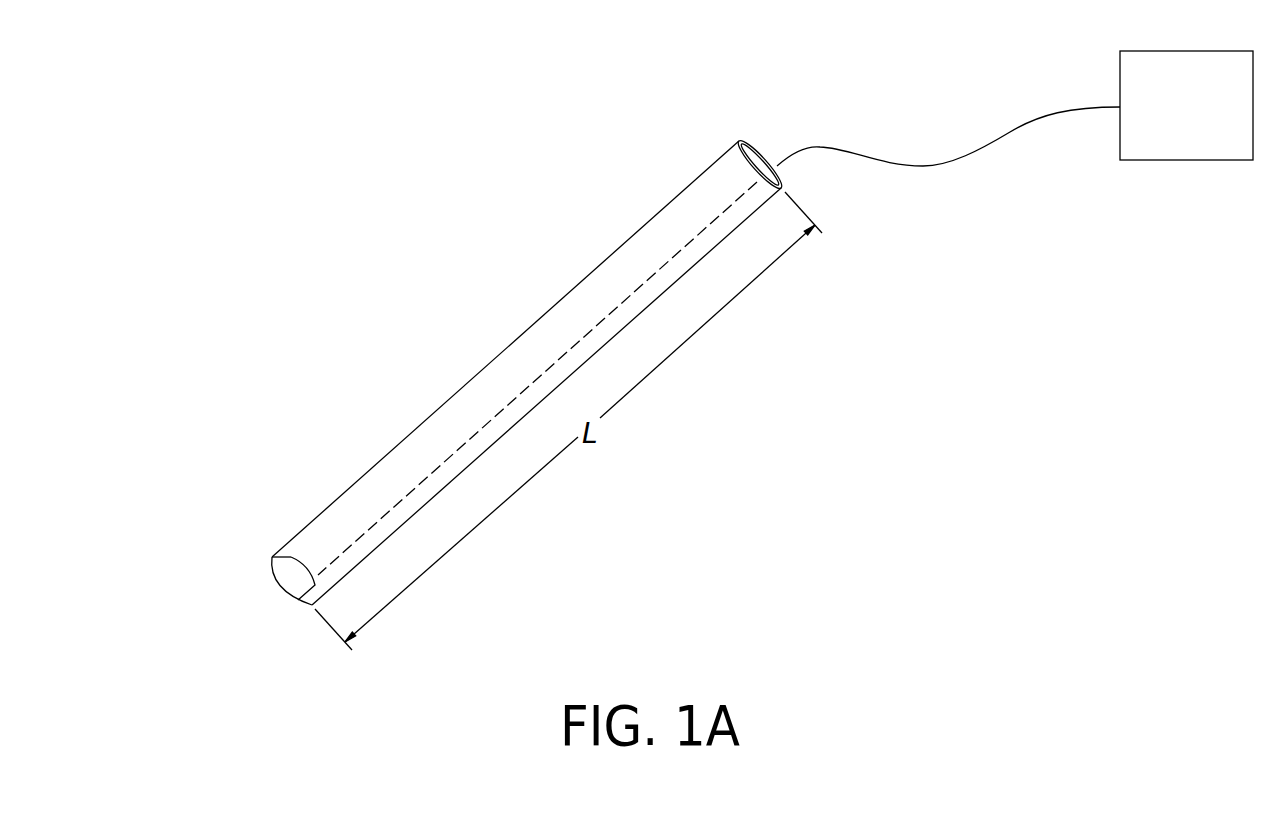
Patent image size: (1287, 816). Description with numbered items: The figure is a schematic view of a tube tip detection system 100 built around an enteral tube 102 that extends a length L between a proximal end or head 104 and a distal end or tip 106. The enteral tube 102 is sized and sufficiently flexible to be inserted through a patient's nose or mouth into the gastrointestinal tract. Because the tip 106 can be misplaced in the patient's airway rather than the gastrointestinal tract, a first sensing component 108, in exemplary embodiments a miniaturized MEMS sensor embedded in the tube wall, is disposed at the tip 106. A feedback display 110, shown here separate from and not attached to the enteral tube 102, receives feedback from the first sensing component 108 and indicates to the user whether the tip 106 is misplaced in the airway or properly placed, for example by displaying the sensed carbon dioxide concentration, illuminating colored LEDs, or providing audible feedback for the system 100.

The tube tip detection system 100 is at (426, 144).
The enteral tube 102 is at (480, 396).
The proximal end or head 104 is at (775, 136).
The distal end or tip 106 is at (264, 582).
The first sensing component 108 is at (285, 573).
The feedback display 110 is at (1215, 120).